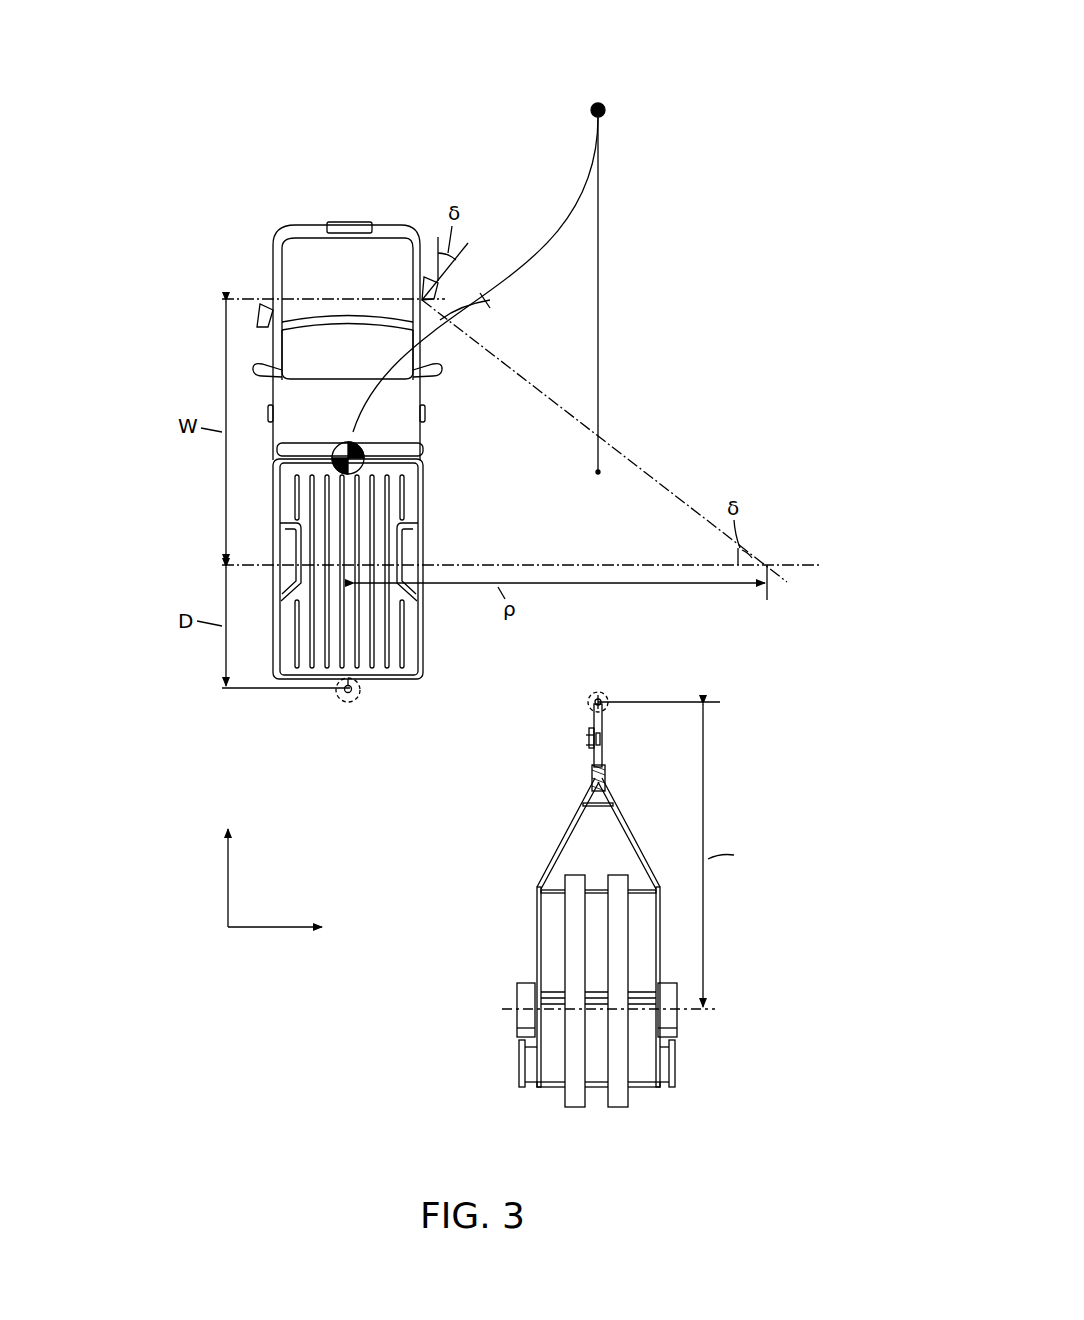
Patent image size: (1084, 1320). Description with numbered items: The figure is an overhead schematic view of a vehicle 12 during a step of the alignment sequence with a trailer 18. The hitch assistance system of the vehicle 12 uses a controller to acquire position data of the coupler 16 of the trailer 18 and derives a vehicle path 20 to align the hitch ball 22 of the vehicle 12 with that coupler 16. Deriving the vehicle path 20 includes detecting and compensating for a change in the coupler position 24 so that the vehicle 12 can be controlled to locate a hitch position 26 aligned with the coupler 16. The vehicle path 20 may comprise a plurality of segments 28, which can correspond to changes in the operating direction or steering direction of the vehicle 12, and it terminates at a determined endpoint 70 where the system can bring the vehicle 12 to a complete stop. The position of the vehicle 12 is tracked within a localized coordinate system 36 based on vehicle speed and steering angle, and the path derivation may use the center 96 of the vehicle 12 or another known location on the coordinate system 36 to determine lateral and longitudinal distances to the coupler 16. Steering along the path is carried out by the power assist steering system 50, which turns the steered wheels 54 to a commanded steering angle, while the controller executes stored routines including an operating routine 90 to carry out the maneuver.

The vehicle 12 is at (250, 225).
The coupler 16 is at (608, 706).
The trailer 18 is at (532, 928).
The vehicle path 20 is at (678, 62).
The hitch ball 22 is at (341, 692).
The coupler position 24 is at (612, 694).
The hitch position 26 is at (358, 699).
The segments 28 is at (549, 271).
The localized coordinate system 36 is at (278, 949).
The steering system 50 is at (440, 338).
The steered wheels 54 is at (263, 311).
The endpoint 70 is at (596, 474).
The operating routine 90 is at (592, 103).
The center 96 is at (340, 470).